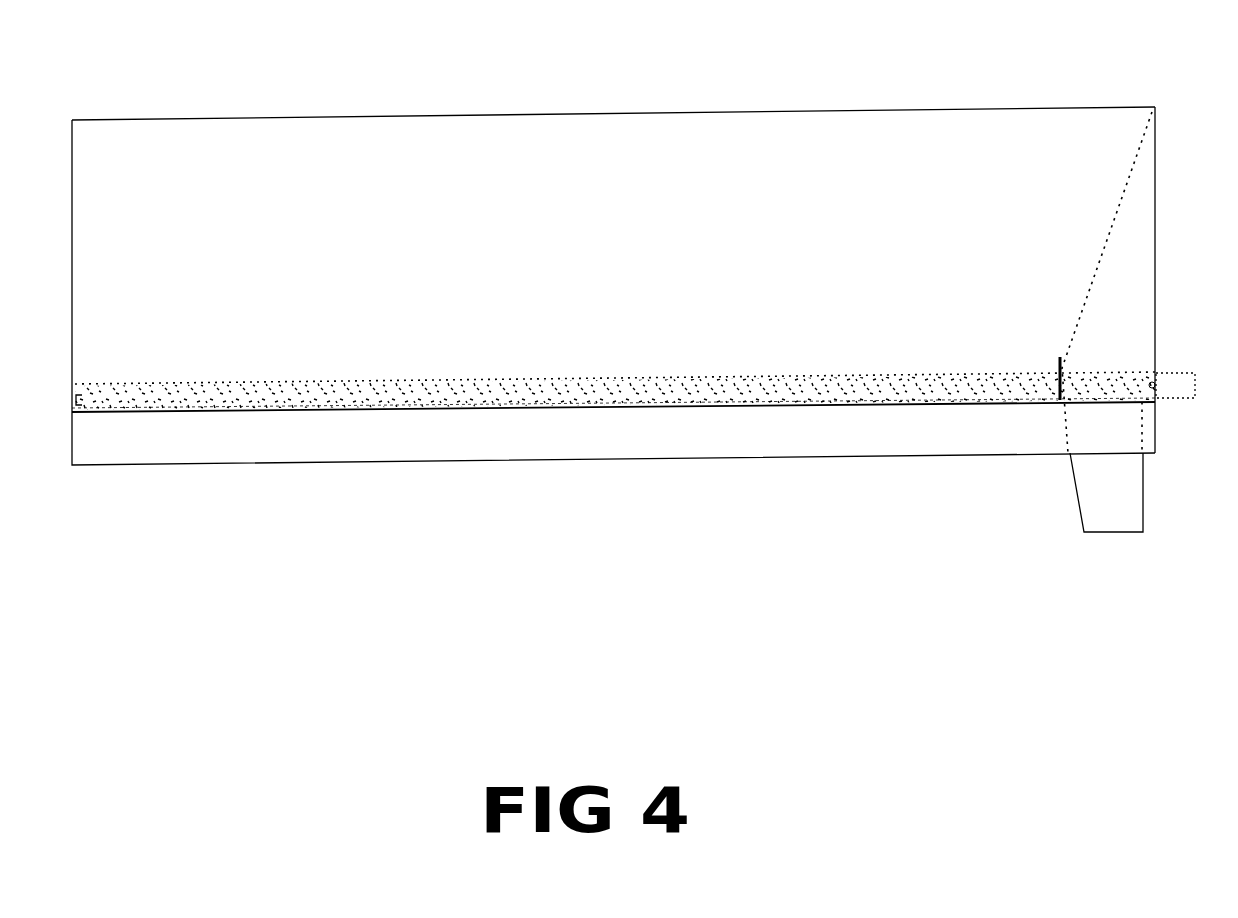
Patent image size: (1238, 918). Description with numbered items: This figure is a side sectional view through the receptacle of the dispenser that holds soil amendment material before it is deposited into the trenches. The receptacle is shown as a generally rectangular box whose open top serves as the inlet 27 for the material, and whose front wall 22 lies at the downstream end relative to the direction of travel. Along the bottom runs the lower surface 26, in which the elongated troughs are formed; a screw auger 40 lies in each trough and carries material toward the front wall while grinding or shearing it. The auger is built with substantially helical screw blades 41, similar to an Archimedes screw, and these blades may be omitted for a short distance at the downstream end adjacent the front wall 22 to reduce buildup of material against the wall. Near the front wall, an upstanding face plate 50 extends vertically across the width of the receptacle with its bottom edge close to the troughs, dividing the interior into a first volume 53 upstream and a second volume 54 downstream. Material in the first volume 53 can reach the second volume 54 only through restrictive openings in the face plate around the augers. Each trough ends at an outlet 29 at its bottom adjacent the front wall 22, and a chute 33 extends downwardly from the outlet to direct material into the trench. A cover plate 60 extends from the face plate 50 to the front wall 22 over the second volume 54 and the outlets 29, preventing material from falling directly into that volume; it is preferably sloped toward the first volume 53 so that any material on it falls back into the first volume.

The front wall 22 is at (1160, 148).
The inlet 27 is at (292, 112).
The second volume 54 is at (1130, 257).
The first volume 53 is at (610, 250).
The screw auger 40 is at (403, 390).
The screw blades 41 is at (557, 380).
The lower surface 26 is at (362, 410).
The cover plate 60 is at (1115, 207).
The face plate 50 is at (1058, 360).
The outlet 29 is at (1112, 398).
The chute 33 is at (1100, 488).